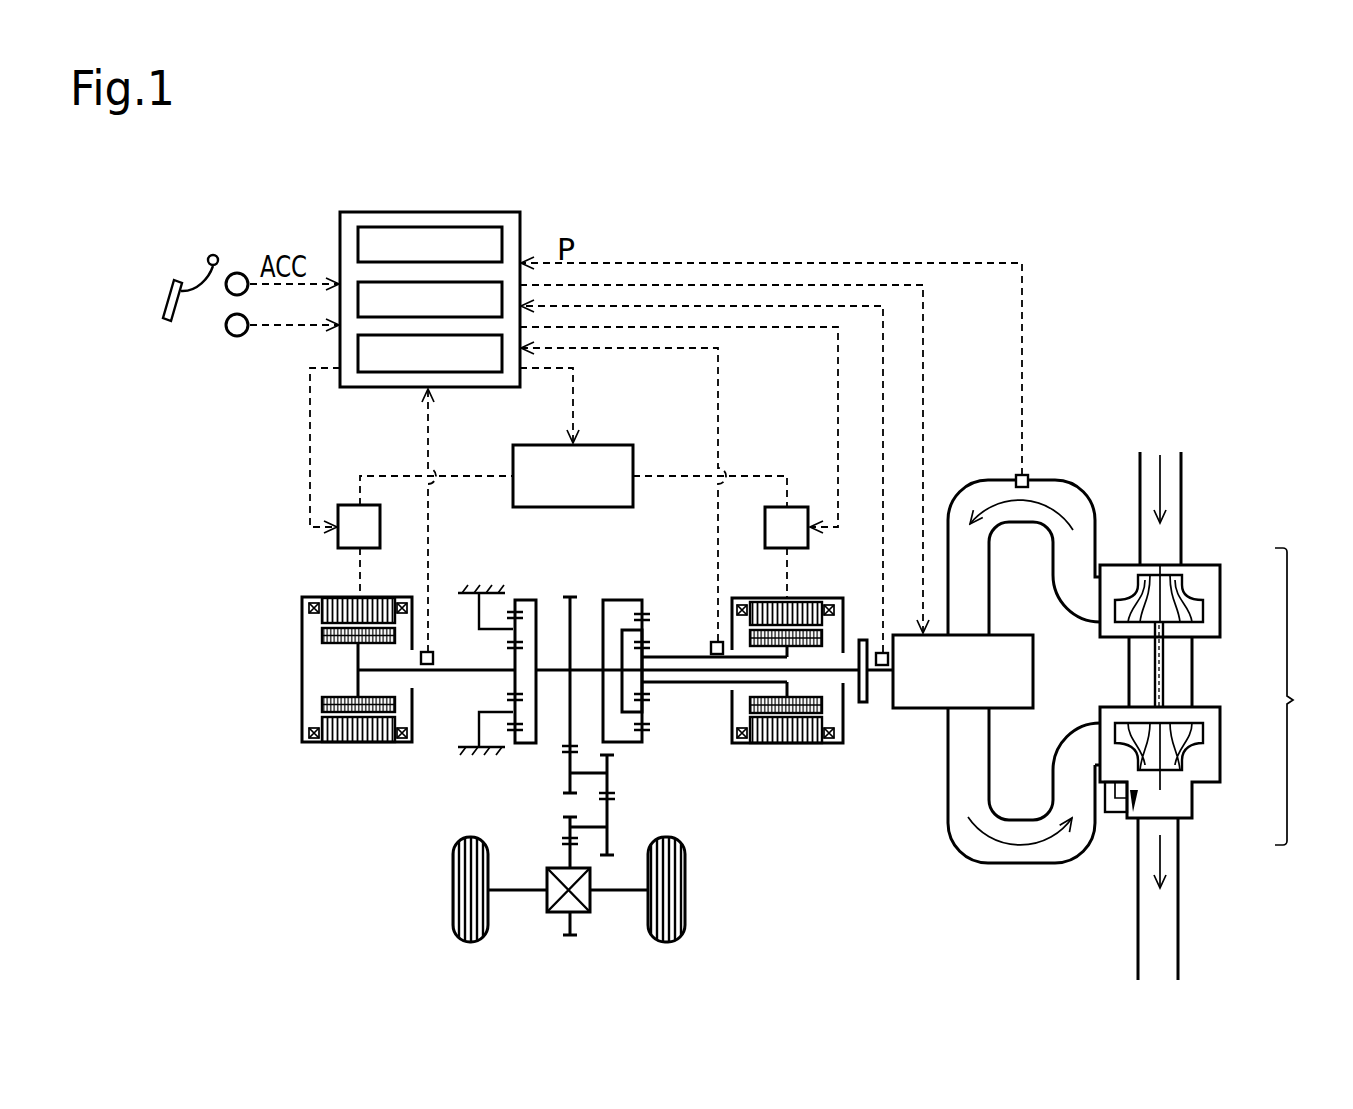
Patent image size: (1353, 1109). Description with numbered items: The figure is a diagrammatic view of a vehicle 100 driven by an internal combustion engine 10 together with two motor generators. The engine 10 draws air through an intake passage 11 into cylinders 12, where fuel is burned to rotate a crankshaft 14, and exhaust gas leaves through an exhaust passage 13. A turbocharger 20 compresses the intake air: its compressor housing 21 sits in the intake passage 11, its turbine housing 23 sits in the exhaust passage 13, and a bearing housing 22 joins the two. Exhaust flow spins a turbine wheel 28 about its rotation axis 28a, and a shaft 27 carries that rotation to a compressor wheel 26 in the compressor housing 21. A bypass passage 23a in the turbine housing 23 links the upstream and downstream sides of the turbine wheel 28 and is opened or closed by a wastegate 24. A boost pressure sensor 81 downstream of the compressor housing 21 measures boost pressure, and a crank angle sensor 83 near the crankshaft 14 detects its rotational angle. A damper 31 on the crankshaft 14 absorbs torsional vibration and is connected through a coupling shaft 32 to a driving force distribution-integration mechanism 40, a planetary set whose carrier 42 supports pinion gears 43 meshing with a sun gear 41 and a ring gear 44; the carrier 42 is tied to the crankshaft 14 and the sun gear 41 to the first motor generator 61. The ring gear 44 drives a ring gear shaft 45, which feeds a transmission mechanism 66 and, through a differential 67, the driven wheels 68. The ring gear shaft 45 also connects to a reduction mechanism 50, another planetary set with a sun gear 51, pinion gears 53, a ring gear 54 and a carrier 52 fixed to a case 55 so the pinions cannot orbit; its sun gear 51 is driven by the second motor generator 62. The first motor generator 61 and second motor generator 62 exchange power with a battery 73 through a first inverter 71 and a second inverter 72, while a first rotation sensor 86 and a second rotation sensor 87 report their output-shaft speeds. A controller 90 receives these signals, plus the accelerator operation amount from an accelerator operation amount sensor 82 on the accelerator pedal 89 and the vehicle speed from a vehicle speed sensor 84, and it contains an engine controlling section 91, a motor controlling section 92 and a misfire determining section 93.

The vehicle 100 is at (1157, 233).
The internal combustion engine 10 is at (1071, 386).
The intake passage 11 is at (1138, 466).
The cylinders 12 is at (916, 709).
The exhaust passage 13 is at (1136, 922).
The crankshaft 14 is at (880, 674).
The turbocharger 20 is at (1304, 696).
The compressor housing 21 is at (1221, 586).
The bearing housing 22 is at (1193, 650).
The turbine housing 23 is at (1221, 757).
The bypass passage 23a is at (1110, 813).
The wastegate 24 is at (1136, 800).
The compressor wheel 26 is at (1204, 613).
The shaft 27 is at (1164, 679).
The turbine wheel 28 is at (1204, 730).
The rotation axis 28a is at (1156, 650).
The damper 31 is at (863, 703).
The coupling shaft 32 is at (845, 654).
The driving force distribution-integration mechanism 40 is at (641, 582).
The sun gear 41 is at (648, 652).
The carrier 42 is at (628, 728).
The pinion gears 43 is at (648, 705).
The ring gear 44 is at (648, 612).
The ring gear shaft 45 is at (587, 606).
The reduction mechanism 50 is at (476, 563).
The sun gear 51 is at (512, 657).
The carrier 52 is at (512, 708).
The pinion gears 53 is at (512, 728).
The ring gear 54 is at (512, 610).
The case 55 is at (478, 746).
The first motor generator 61 is at (840, 597).
The second motor generator 62 is at (302, 680).
The transmission mechanism 66 is at (630, 806).
The differential 67 is at (555, 914).
The driven wheels 68 is at (453, 900).
The first inverter 71 is at (797, 506).
The second inverter 72 is at (348, 504).
The battery 73 is at (608, 444).
The boost pressure sensor 81 is at (1018, 474).
The accelerator operation amount sensor 82 is at (237, 272).
The crank angle sensor 83 is at (884, 651).
The vehicle speed sensor 84 is at (237, 337).
The first rotation sensor 86 is at (718, 640).
The second rotation sensor 87 is at (430, 650).
The accelerator pedal 89 is at (160, 307).
The controller 90 is at (496, 212).
The engine controlling section 91 is at (455, 228).
The motor controlling section 92 is at (368, 281).
The misfire determining section 93 is at (455, 374).